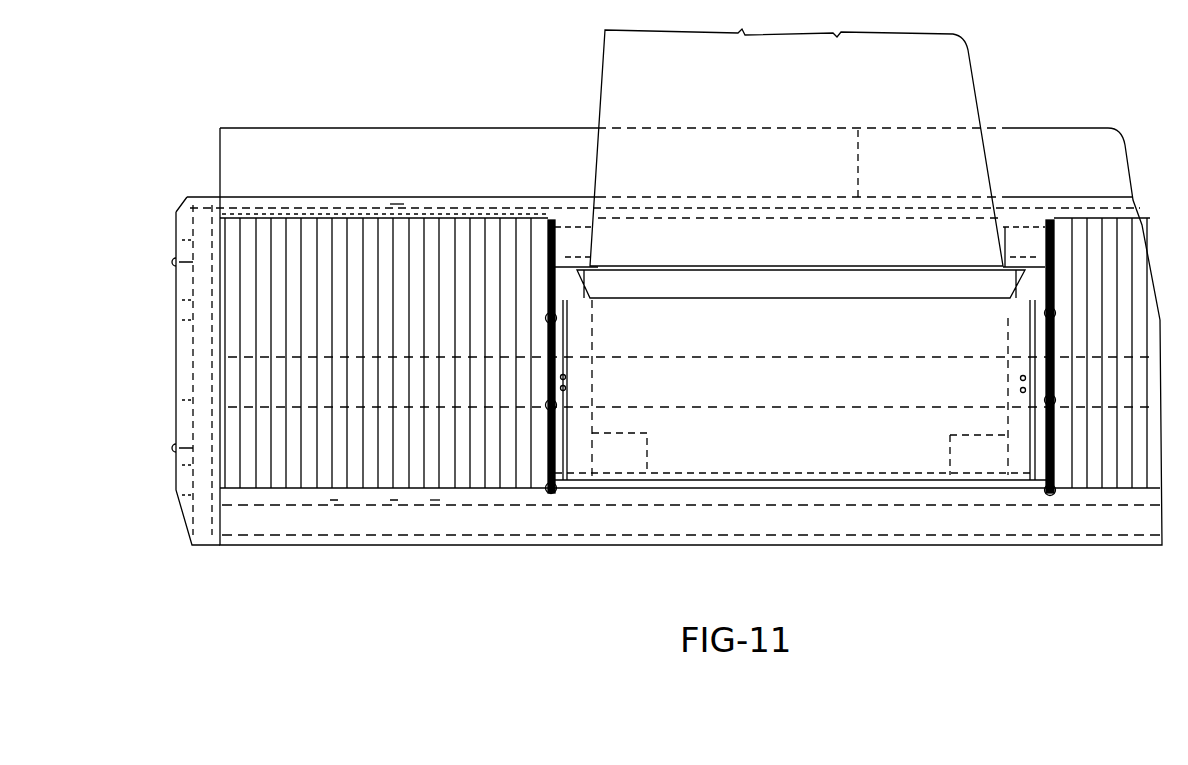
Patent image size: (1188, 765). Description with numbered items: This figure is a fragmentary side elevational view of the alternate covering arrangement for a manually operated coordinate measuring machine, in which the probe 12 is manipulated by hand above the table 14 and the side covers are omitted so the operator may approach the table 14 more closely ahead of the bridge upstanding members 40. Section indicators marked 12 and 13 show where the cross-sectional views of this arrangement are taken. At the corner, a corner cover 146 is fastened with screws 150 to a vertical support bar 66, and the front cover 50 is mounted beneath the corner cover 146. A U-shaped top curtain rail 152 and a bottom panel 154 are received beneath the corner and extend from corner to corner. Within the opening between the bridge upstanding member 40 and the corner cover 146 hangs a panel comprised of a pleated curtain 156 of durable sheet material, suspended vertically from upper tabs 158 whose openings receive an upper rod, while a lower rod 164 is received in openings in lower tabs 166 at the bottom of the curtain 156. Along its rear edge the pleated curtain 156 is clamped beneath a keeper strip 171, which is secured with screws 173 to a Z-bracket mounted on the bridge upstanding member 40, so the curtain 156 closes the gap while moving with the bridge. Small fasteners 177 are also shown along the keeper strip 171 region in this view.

The table 14 is at (531, 100).
The bridge upstanding side member 40 is at (772, 84).
The front cover 50 is at (176, 350).
The vertical support bar 66 is at (185, 246).
The corner cover 146 is at (186, 287).
The screws 150 is at (283, 205).
The top curtain rail 152 is at (415, 205).
The bottom panel 154 is at (270, 528).
The pleated curtain 156 is at (395, 310).
The tabs 158 is at (396, 208).
The lower rod 164 is at (435, 505).
The lower tabs 166 is at (333, 502).
The keeper strip 171 is at (548, 253).
The screws 173 is at (548, 227).
The fastener 177 is at (568, 389).
The probe 12 is at (161, 226).
The section line 13- 13 is at (1095, 163).